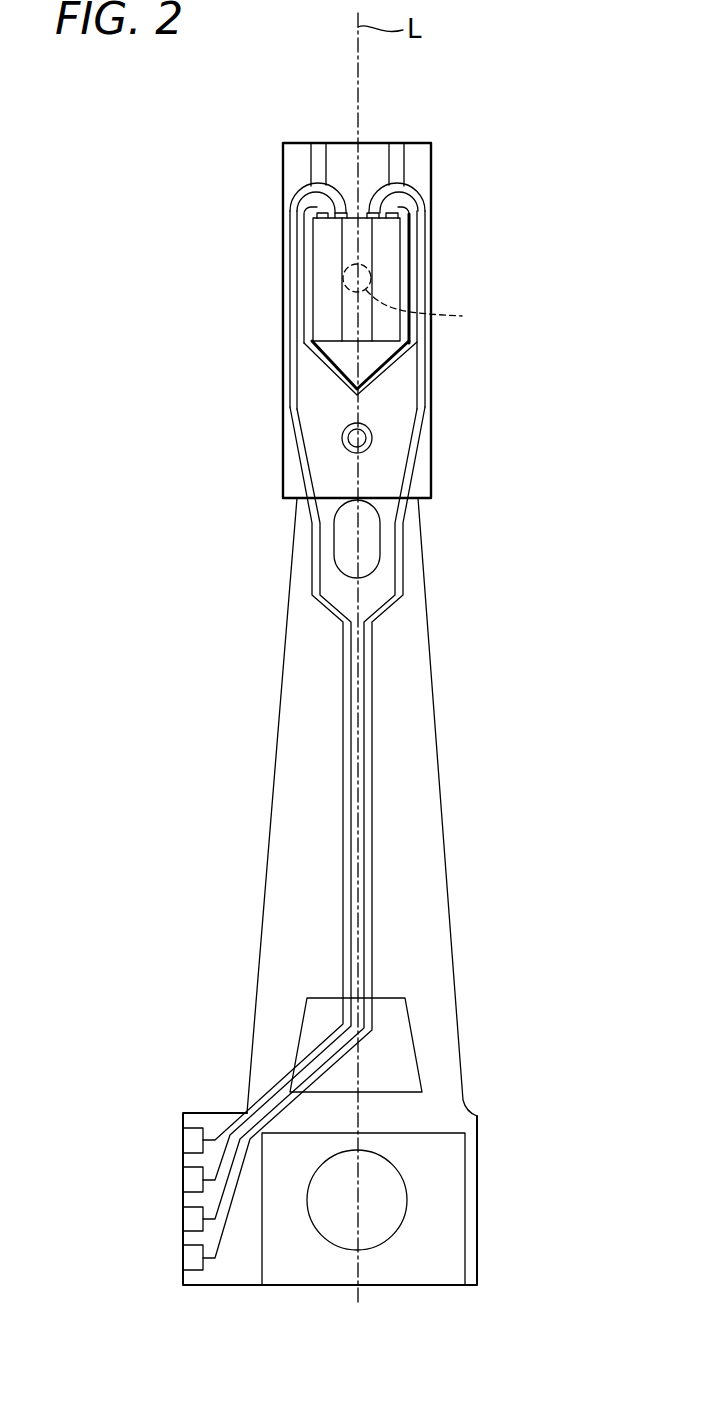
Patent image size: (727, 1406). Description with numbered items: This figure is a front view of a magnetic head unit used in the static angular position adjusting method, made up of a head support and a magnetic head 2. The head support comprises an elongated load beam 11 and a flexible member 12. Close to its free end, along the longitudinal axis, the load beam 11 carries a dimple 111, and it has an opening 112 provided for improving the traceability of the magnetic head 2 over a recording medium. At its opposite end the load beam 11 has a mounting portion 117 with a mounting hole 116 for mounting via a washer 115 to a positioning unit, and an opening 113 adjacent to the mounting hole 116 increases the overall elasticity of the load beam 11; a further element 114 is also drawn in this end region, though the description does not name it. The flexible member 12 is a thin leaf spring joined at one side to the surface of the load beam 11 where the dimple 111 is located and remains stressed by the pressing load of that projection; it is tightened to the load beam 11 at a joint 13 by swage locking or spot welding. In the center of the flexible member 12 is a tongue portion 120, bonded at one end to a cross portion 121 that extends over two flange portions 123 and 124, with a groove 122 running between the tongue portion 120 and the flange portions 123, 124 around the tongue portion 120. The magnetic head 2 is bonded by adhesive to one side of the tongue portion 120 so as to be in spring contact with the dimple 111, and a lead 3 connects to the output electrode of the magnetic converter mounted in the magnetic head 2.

The magnetic head 2 is at (320, 303).
The lead 3 is at (294, 462).
The load beam 11 is at (418, 582).
The flexible member 12 is at (432, 450).
The joint 13 is at (352, 438).
The dimple 111 is at (428, 301).
The opening 112 is at (345, 543).
The opening 113 is at (302, 1030).
The connection terminals 114 is at (192, 1179).
The washer 115 is at (450, 1164).
The mounting hole 116 is at (344, 1250).
The mounting portion 117 is at (478, 1232).
The tongue portion 120 is at (373, 349).
The cross portion 121 is at (398, 146).
The groove 122 is at (306, 343).
The flange portion 123 is at (283, 259).
The flange portion 124 is at (424, 281).